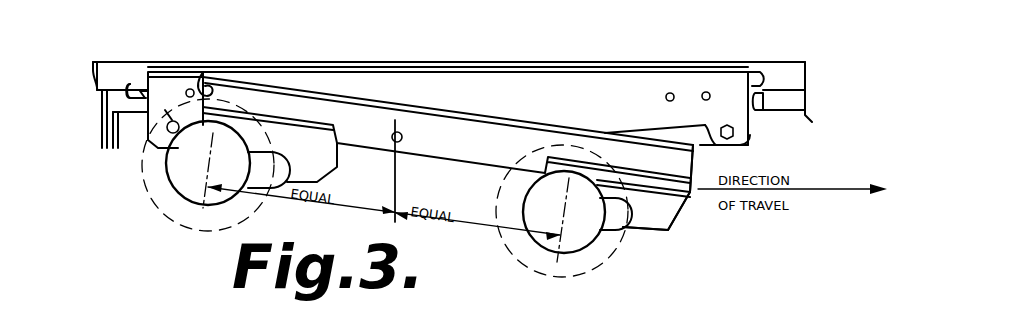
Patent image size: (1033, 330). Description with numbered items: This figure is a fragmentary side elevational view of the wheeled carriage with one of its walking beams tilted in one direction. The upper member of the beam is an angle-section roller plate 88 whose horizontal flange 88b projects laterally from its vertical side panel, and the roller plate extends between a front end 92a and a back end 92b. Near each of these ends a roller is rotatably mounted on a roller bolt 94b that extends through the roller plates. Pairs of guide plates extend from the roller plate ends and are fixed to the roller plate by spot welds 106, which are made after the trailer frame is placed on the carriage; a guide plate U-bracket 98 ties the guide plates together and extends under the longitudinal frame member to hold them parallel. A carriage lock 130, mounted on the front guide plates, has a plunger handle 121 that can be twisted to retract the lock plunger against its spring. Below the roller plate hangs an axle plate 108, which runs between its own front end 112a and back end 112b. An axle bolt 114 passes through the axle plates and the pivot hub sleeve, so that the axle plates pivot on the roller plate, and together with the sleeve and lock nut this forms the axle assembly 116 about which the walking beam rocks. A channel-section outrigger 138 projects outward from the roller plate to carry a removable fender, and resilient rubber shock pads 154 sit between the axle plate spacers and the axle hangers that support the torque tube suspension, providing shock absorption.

The roller plate 88 is at (574, 104).
The horizontal flange 88b is at (405, 62).
The front end 92a is at (752, 82).
The back end 92b is at (140, 85).
The roller bolt 94b is at (160, 143).
The guide plate U-bracket 98 is at (113, 156).
The spot weld 106 is at (194, 91).
The axle plate 108 is at (523, 150).
The front end 112a is at (693, 172).
The back end 112b is at (203, 84).
The axle bolt 114 is at (392, 137).
The axle assembly 116 is at (403, 137).
The plunger handle 121 is at (102, 128).
The carriage lock 130 is at (97, 68).
The outrigger 138 is at (148, 88).
The resilient rubber shock pad 154 is at (693, 192).